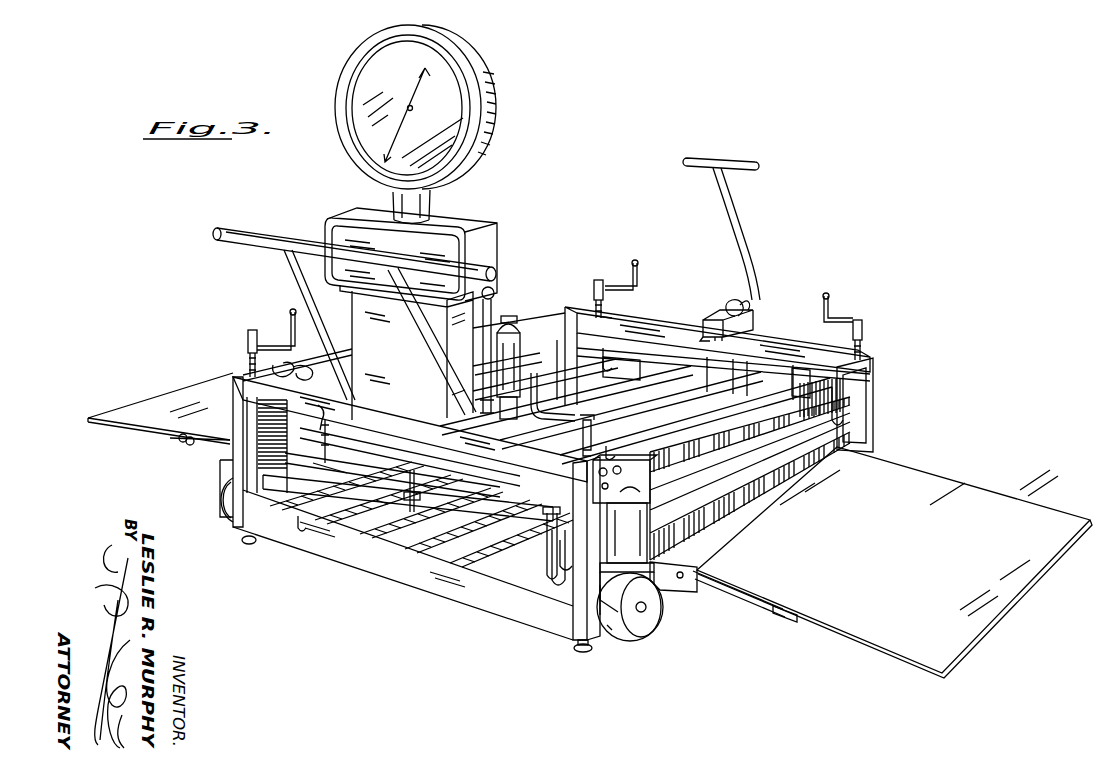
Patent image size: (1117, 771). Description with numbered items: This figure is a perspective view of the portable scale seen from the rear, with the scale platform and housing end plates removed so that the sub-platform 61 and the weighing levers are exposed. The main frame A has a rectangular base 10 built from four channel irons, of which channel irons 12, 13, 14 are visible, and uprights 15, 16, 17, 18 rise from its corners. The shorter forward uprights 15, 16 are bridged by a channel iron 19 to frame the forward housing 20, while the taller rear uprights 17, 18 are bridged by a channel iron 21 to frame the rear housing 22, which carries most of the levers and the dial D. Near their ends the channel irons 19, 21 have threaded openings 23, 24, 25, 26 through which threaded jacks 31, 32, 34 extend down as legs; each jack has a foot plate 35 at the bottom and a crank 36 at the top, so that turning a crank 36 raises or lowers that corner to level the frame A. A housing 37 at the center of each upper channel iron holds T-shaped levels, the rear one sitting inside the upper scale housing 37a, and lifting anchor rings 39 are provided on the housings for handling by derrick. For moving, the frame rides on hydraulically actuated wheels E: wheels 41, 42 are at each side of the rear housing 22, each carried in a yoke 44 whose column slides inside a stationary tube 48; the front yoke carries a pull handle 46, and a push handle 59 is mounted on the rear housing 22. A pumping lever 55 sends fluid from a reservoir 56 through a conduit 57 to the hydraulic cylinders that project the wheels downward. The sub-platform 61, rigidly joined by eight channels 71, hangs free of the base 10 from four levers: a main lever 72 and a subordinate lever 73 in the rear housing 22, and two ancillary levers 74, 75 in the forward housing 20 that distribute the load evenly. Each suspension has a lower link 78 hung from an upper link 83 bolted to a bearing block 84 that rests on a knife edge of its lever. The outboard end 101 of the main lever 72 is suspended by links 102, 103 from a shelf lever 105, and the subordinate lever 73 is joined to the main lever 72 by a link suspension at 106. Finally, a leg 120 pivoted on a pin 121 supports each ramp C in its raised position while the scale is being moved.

The rectangular base 10 is at (358, 553).
The channel iron 12 is at (606, 634).
The channel iron 13 is at (505, 605).
The channel iron 14 is at (557, 356).
The upright 15 is at (871, 410).
The upright 16 is at (560, 318).
The upright 17 is at (580, 548).
The upright 18 is at (220, 468).
The channel iron 19 is at (668, 322).
The forward housing 20 is at (887, 367).
The channel iron 21 is at (410, 397).
The rear housing 22 is at (232, 369).
The threaded opening 23 is at (868, 360).
The threaded opening 24 is at (606, 316).
The threaded opening 25 is at (577, 456).
The threaded opening 26 is at (283, 364).
The threaded jack 31 is at (862, 338).
The threaded jack 32 is at (594, 288).
The threaded jack 34 is at (248, 345).
The foot plate 35 is at (251, 544).
The crank 36 is at (291, 316).
The housing 37 is at (745, 326).
The upper scale housing 37a is at (390, 314).
The lifting anchor ring 39 is at (741, 300).
The wheel 41 is at (660, 624).
The wheel 42 is at (228, 520).
The yoke 44 is at (650, 590).
The handle 46 is at (746, 236).
The stationary cylindrical tube 48 is at (690, 546).
The pumping lever 55 is at (484, 332).
The reservoir 56 is at (497, 352).
The conduit 57 is at (518, 422).
The handle 59 is at (217, 234).
The sub-platform 61 is at (723, 470).
The channel 71 is at (693, 408).
The main lever 72 is at (408, 498).
The subordinate lever 73 is at (332, 500).
The ancillary lever 74 is at (792, 383).
The ancillary lever 75 is at (640, 366).
The lower link 78 is at (562, 596).
The upper link 83 is at (843, 400).
The bearing block 84 is at (547, 527).
The outboard end 101 is at (340, 465).
The link 102 is at (323, 440).
The link 103 is at (318, 408).
The shelf lever 105 is at (357, 432).
The link suspension 106 is at (424, 491).
The leg 120 is at (748, 600).
The pivot pin 121 is at (790, 609).
The main frame A is at (433, 588).
The ramp C is at (888, 528).
The dial D is at (492, 97).
The hydraulically actuated wheel E is at (203, 520).